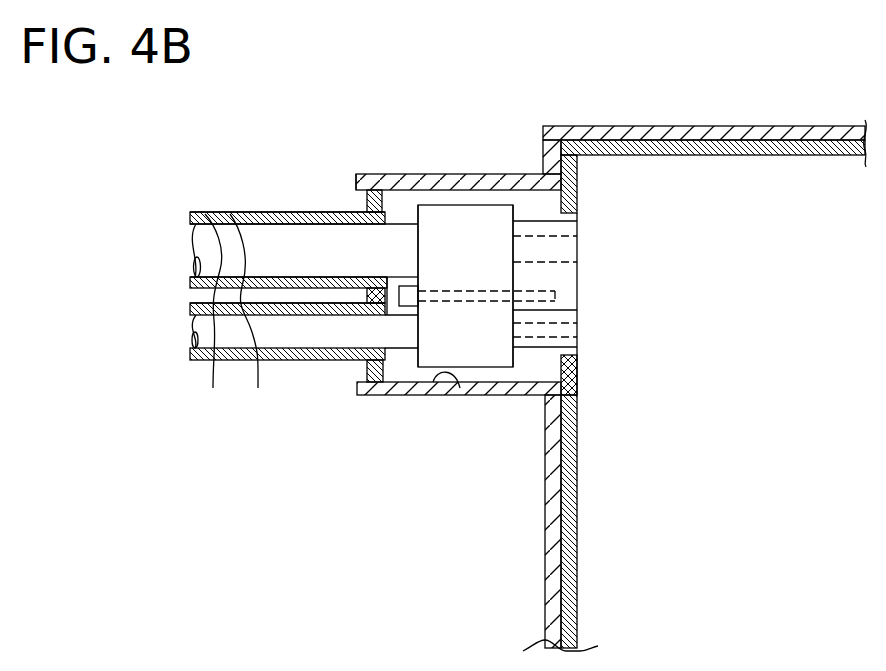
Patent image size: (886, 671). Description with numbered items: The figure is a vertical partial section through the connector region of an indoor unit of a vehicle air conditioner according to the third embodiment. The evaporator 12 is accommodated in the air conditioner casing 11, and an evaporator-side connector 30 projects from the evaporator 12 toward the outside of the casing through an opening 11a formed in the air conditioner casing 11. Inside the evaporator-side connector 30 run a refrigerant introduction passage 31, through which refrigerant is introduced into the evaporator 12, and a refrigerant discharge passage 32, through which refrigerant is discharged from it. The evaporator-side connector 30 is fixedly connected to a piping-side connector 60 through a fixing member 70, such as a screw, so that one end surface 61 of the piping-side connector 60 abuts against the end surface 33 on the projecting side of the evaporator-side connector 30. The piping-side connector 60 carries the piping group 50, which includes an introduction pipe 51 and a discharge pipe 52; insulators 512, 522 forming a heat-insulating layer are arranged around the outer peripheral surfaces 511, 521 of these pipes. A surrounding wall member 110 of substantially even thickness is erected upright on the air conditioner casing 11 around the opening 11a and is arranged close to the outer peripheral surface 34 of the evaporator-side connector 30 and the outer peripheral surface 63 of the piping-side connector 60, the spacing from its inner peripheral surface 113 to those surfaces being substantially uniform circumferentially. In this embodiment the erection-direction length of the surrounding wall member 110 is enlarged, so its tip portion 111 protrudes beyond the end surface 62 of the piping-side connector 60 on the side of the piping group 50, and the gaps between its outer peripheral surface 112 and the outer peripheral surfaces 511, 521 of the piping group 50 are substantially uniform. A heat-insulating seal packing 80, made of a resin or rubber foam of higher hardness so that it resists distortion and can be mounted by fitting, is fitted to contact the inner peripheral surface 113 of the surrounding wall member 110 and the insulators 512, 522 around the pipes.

The air conditioner casing 11 is at (713, 133).
The opening 11a is at (553, 190).
The evaporator 12 is at (762, 183).
The evaporator-side connector 30 is at (538, 230).
The refrigerant introduction passage 31 is at (577, 333).
The refrigerant discharge passage 32 is at (560, 248).
The end surface 33 is at (527, 333).
The outer peripheral surface 34 is at (538, 346).
The piping group 50 is at (280, 310).
The introduction pipe 51 is at (213, 388).
The discharge pipe 52 is at (258, 388).
The outer peripheral surface 511 is at (218, 212).
The insulator 512 is at (193, 222).
The outer peripheral surface 521 is at (297, 211).
The insulator 522 is at (257, 211).
The piping-side connector 60 is at (453, 217).
The end surface 61 is at (513, 308).
The end surface 62 is at (417, 209).
The outer peripheral surface 63 is at (405, 392).
The fixing member 70 is at (400, 300).
The seal packing 80 is at (370, 190).
The surrounding wall member 110 is at (490, 182).
The tip portion 111 is at (356, 177).
The outer peripheral surface 112 is at (457, 396).
The inner peripheral surface 113 is at (433, 383).